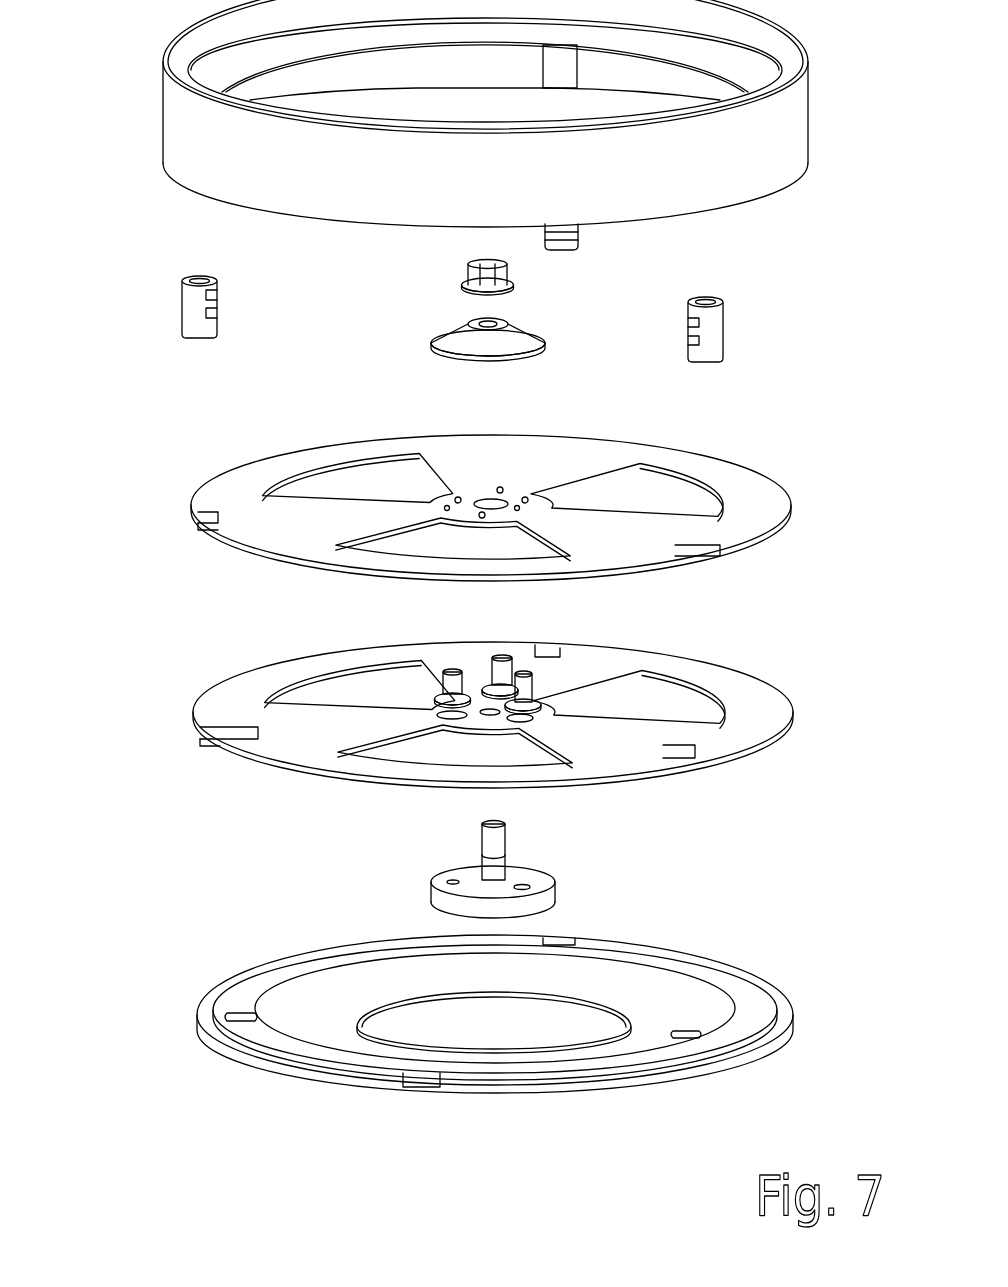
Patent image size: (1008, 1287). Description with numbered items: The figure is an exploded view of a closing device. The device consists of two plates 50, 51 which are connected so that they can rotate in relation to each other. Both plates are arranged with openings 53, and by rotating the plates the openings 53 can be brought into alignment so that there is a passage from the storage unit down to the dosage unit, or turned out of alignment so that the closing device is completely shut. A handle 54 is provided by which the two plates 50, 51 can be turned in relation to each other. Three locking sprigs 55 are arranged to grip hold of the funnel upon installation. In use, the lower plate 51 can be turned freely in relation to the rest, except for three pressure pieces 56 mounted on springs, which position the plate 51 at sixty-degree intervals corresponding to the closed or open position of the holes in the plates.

The plate 50 is at (197, 519).
The plate 51 is at (290, 740).
The openings 53 is at (722, 562).
The handle 54 is at (560, 880).
The locking sprigs 55 is at (182, 310).
The pressure pieces 56 is at (447, 668).